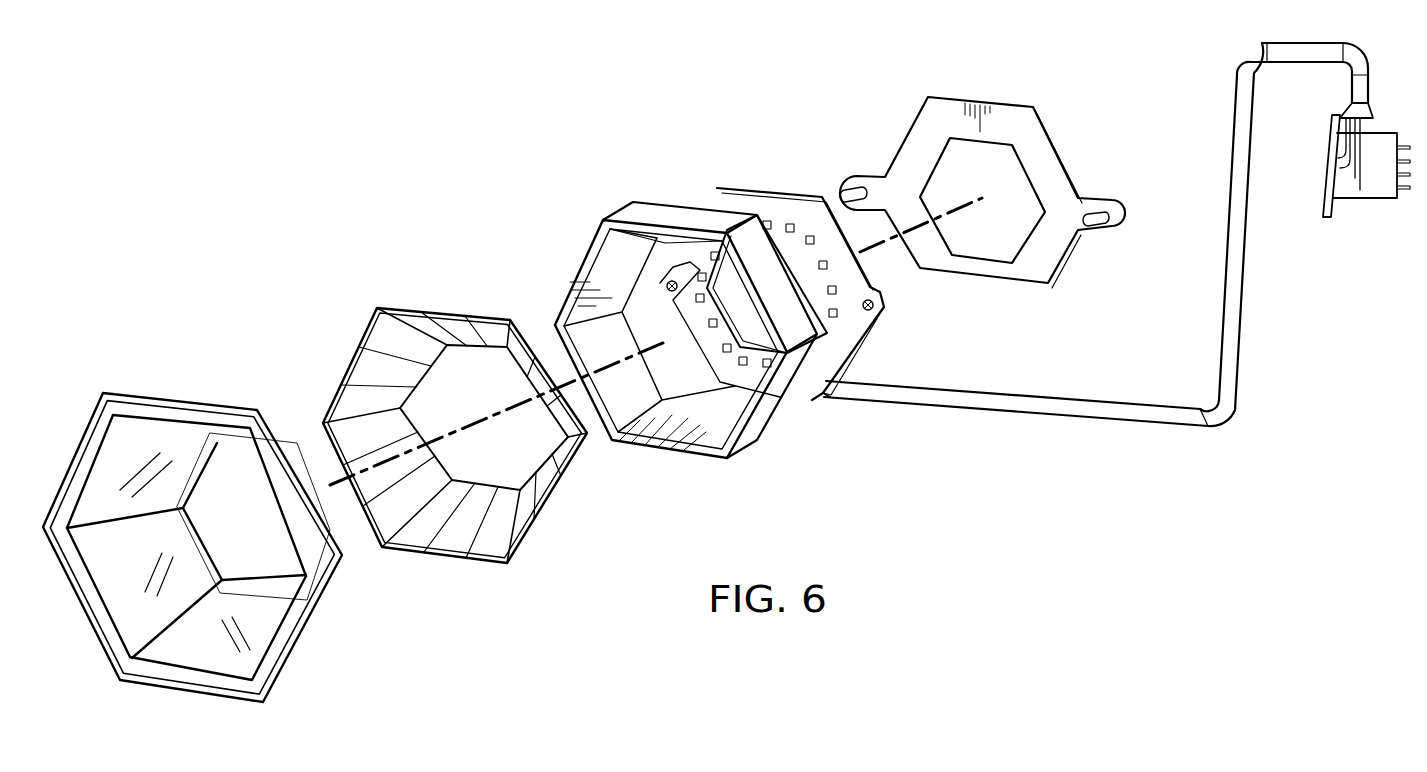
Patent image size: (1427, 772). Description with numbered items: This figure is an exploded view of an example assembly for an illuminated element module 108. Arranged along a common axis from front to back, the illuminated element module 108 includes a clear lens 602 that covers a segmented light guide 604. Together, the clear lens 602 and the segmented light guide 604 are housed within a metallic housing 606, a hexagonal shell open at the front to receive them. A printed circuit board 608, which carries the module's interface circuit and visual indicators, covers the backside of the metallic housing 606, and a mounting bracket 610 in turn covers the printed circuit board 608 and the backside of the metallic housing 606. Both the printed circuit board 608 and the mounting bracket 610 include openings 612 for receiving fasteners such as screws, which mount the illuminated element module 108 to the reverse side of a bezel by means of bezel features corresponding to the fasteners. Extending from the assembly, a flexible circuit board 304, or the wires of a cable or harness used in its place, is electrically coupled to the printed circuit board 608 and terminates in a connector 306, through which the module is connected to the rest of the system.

The illuminated element module 108 is at (356, 88).
The clear lens 602 is at (178, 692).
The segmented light guide 604 is at (450, 557).
The metallic housing 606 is at (618, 212).
The printed circuit board 608 is at (768, 202).
The mounting bracket 610 is at (1018, 100).
The openings 612 is at (667, 283).
The flexible circuit board 304 is at (1242, 352).
The connector 306 is at (1372, 200).